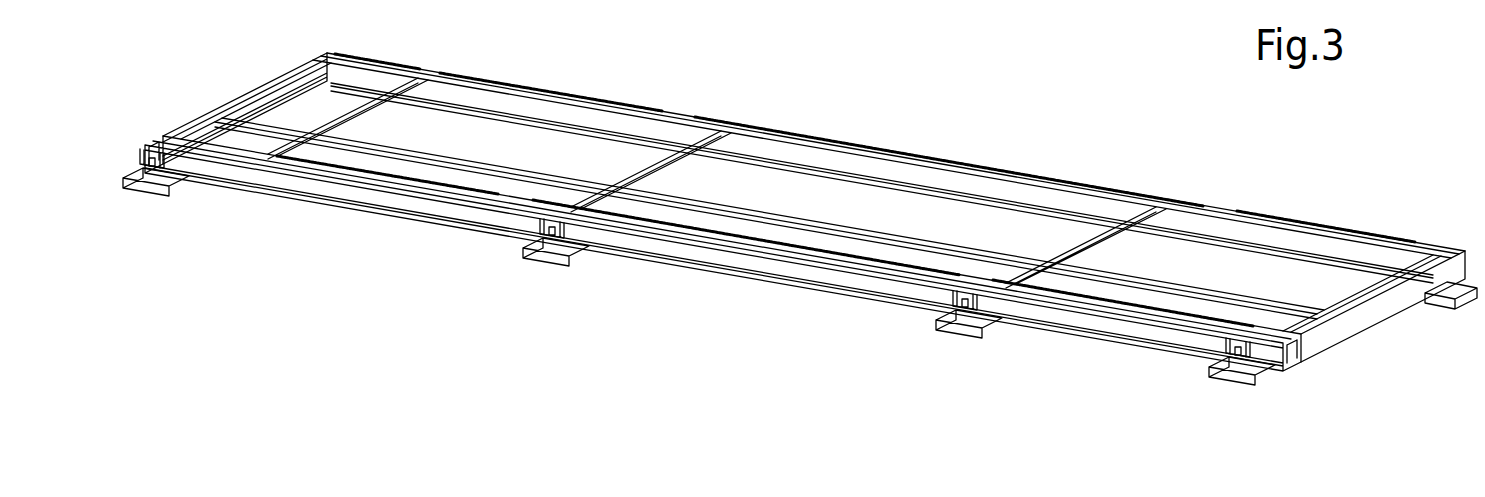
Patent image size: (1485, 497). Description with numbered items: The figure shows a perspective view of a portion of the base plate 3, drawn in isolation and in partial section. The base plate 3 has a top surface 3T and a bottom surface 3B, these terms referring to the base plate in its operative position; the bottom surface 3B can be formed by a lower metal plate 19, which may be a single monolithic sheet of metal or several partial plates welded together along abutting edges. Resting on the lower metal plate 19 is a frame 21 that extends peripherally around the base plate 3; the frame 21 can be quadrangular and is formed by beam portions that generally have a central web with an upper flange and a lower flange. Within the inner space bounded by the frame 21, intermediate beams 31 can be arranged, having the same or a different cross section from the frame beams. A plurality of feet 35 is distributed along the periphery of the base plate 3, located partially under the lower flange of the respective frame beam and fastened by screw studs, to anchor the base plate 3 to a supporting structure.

The base plate 3 is at (880, 101).
The top surface 3T is at (957, 190).
The bottom surface 3B is at (828, 175).
The lower metal plate 19 is at (1210, 268).
The frame 21 is at (745, 262).
The intermediate beams 31 is at (1289, 278).
The feet 35 is at (160, 187).